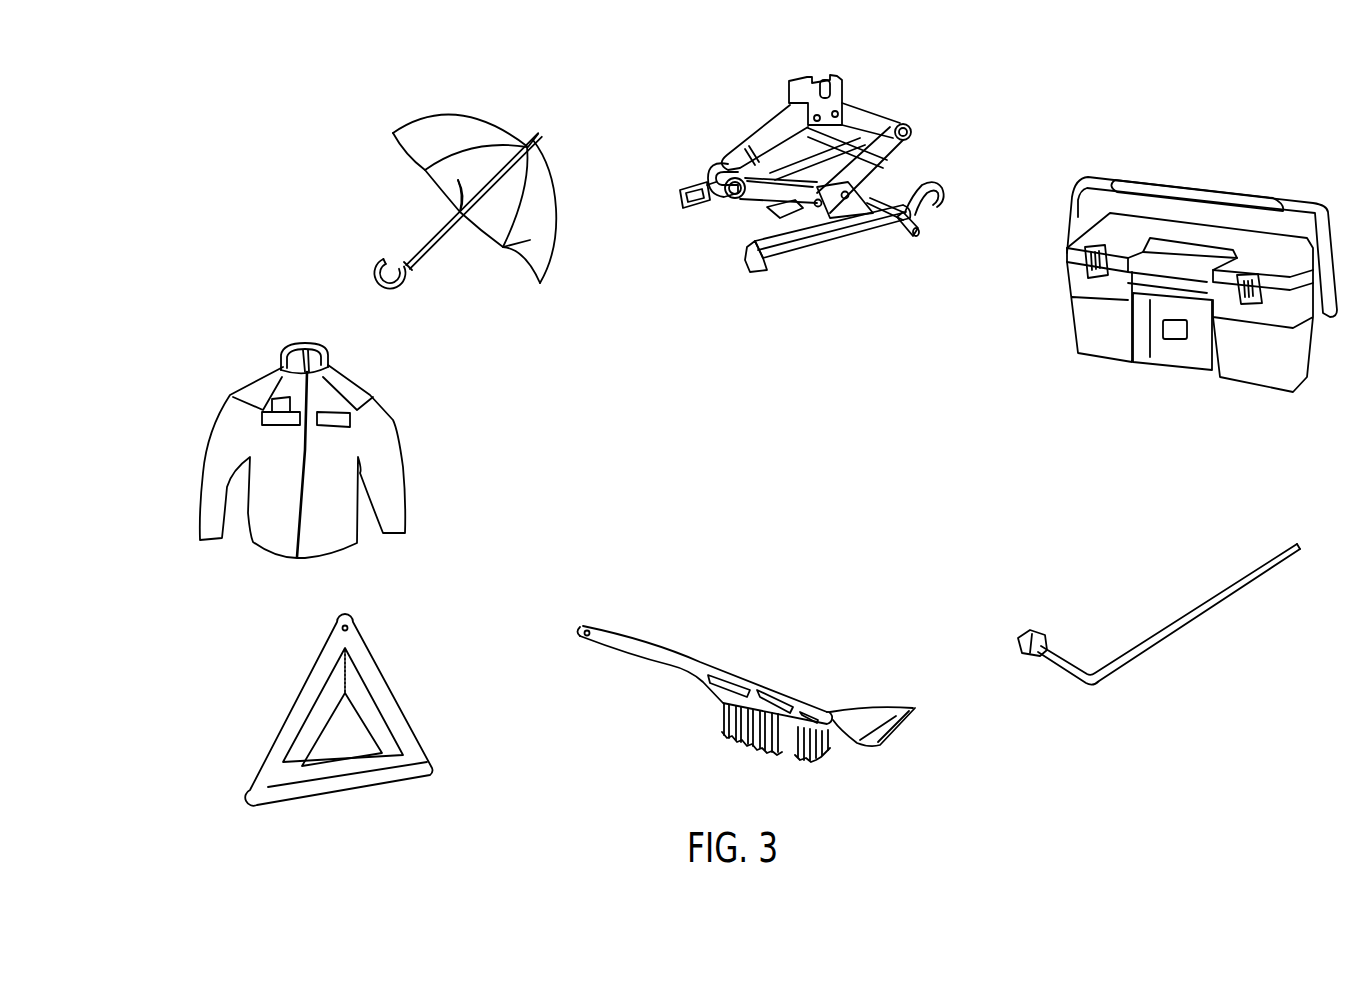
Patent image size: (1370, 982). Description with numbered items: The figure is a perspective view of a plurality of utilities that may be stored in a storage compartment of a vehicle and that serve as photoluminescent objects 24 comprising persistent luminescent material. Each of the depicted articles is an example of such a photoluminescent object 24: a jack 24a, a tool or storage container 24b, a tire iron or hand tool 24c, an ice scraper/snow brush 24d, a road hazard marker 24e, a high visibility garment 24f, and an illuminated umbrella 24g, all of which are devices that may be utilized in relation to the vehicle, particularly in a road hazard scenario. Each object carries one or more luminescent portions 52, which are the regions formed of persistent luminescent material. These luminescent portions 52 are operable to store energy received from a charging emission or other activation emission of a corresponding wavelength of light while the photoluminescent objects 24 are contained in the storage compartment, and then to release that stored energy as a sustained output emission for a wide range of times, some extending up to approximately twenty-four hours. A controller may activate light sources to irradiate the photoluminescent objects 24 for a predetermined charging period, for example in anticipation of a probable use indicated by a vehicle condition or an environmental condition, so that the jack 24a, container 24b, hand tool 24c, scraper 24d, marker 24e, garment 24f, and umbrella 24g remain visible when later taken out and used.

The photoluminescent object 24 is at (717, 425).
The jack 24a is at (793, 100).
The tool or storage container 24b is at (1073, 192).
The tire iron or hand tool 24c is at (1028, 630).
The ice scraper/snow brush 24d is at (650, 640).
The road hazard marker 24e is at (288, 733).
The high visibility garment 24f is at (230, 413).
The illuminated umbrella 24g is at (422, 125).
The luminescent portion 52 is at (458, 180).